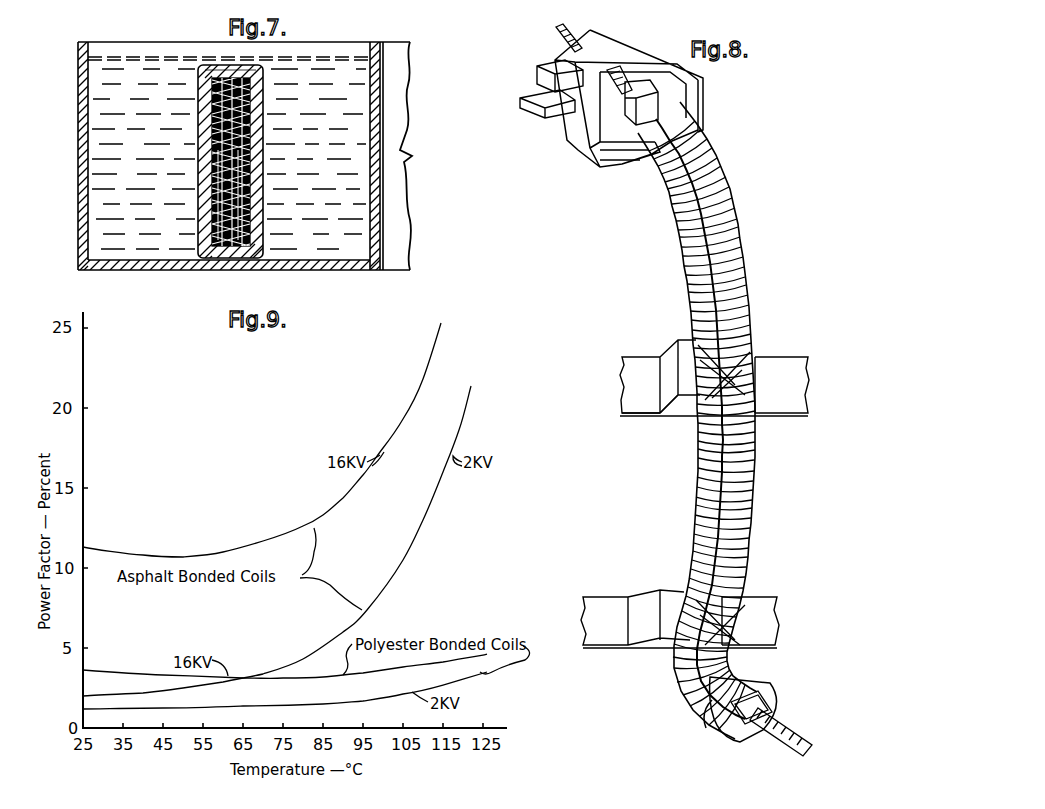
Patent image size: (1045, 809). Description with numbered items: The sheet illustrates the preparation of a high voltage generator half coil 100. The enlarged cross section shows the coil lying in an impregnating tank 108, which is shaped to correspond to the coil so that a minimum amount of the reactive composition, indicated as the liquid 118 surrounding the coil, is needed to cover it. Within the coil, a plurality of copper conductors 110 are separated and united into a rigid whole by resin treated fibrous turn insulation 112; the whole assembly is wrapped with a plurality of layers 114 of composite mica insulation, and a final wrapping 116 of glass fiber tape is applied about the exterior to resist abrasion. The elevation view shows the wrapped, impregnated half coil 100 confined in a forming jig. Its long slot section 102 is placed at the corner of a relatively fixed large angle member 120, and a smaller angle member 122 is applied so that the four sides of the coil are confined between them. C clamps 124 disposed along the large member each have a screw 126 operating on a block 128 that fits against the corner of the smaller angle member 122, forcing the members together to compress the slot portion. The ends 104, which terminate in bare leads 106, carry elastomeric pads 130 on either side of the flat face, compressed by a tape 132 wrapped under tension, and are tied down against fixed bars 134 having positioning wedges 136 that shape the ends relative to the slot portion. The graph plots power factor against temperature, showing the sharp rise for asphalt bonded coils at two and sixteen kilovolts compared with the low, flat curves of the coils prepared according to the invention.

In FIG. 7, the half coil 100 is at (198, 160).
In FIG. 8, the half coil 100 is at (716, 420).
In FIG. 8, the slot section 102 is at (552, 80).
In FIG. 8, the ends 104 is at (695, 279).
In FIG. 8, the bare leads 106 is at (810, 742).
In FIG. 7, the impregnating tank 108 is at (86, 66).
In FIG. 7, the conductors 110 is at (210, 201).
In FIG. 7, the turn insulation 112 is at (205, 233).
In FIG. 7, the layers of composite mica insulation 114 is at (258, 167).
In FIG. 7, the glass fiber tape wrapping 116 is at (264, 209).
In FIG. 7, the insulating liquid 118 is at (102, 119).
In FIG. 8, the large angle member 120 is at (703, 128).
In FIG. 8, the angle member 122 is at (553, 102).
In FIG. 8, the C clamps 124 is at (600, 170).
In FIG. 8, the screw 126 is at (556, 33).
In FIG. 8, the block 128 is at (645, 104).
In FIG. 8, the elastomeric pads 130 is at (619, 597).
In FIG. 8, the tape 132 is at (740, 553).
In FIG. 8, the fixed bars 134 is at (638, 360).
In FIG. 8, the positioning wedges 136 is at (682, 410).